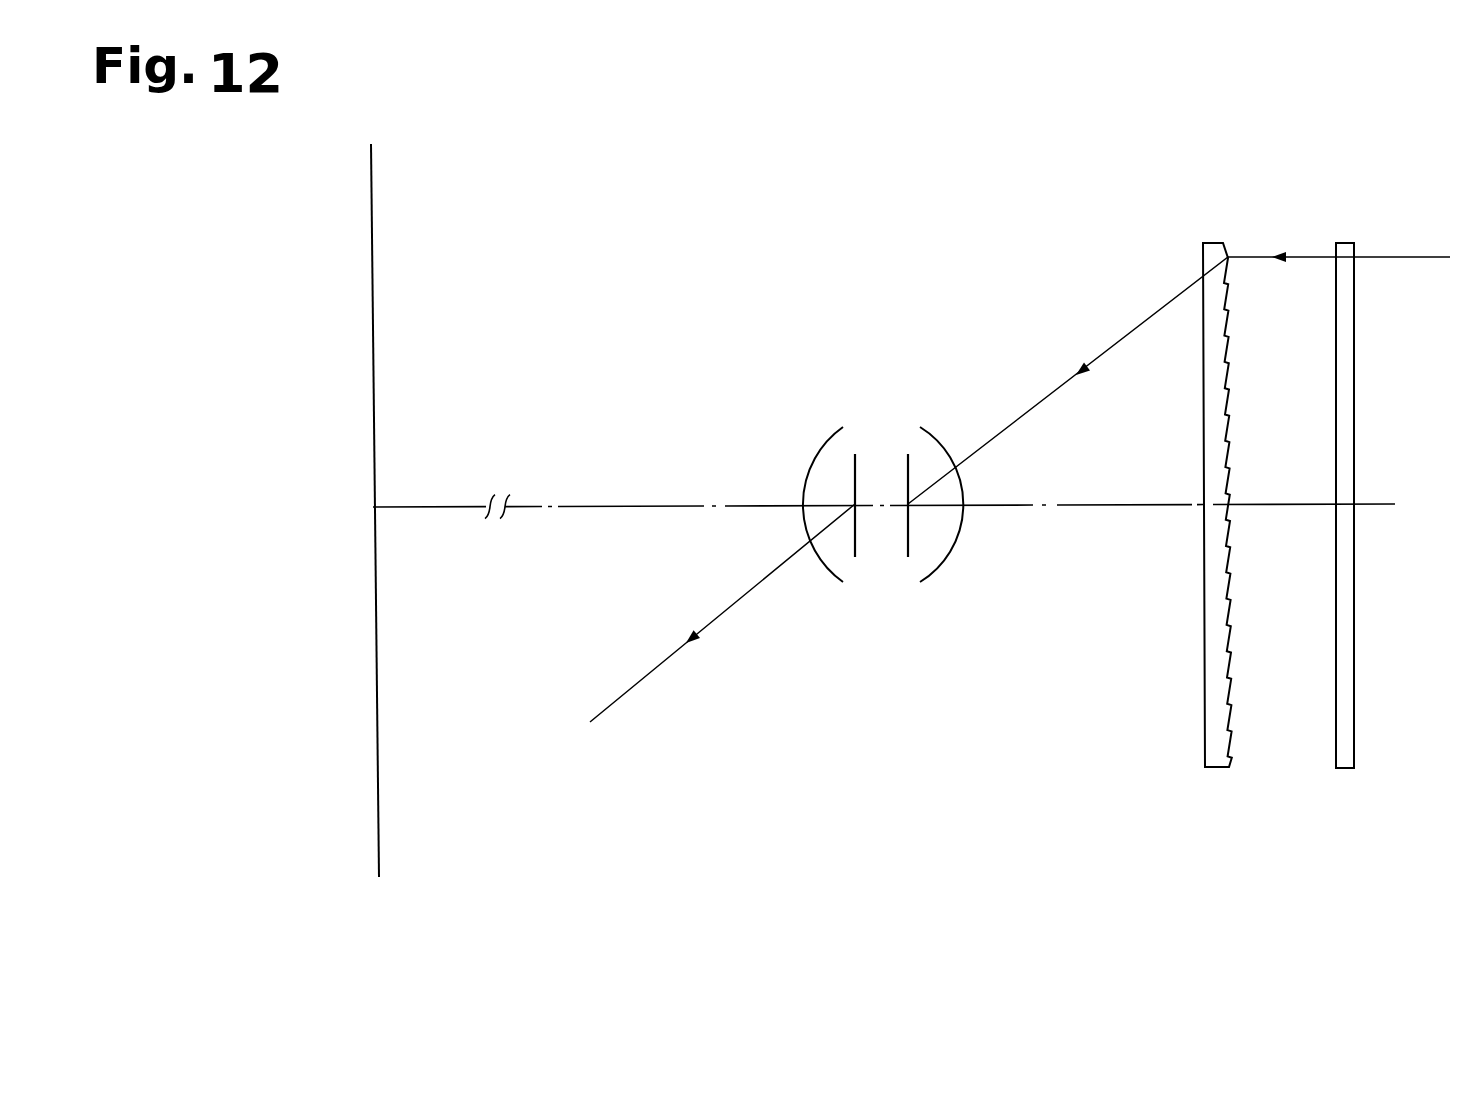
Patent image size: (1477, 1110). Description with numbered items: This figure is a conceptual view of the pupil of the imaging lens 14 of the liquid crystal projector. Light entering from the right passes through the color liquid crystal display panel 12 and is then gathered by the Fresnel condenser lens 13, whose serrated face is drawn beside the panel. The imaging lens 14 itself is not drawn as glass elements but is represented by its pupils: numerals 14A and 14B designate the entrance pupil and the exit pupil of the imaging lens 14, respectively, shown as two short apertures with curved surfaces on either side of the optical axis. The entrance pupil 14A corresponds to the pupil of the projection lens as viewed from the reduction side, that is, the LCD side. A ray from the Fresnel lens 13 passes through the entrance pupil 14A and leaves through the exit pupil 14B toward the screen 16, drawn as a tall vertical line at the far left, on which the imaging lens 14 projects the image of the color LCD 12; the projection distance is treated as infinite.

The color liquid crystal display panel 12 is at (1346, 440).
The Fresnel condenser lens 13 is at (1218, 592).
The imaging lens 14 is at (881, 501).
The entrance pupil 14A is at (908, 468).
The exit pupil 14B is at (853, 465).
The screen 16 is at (377, 775).